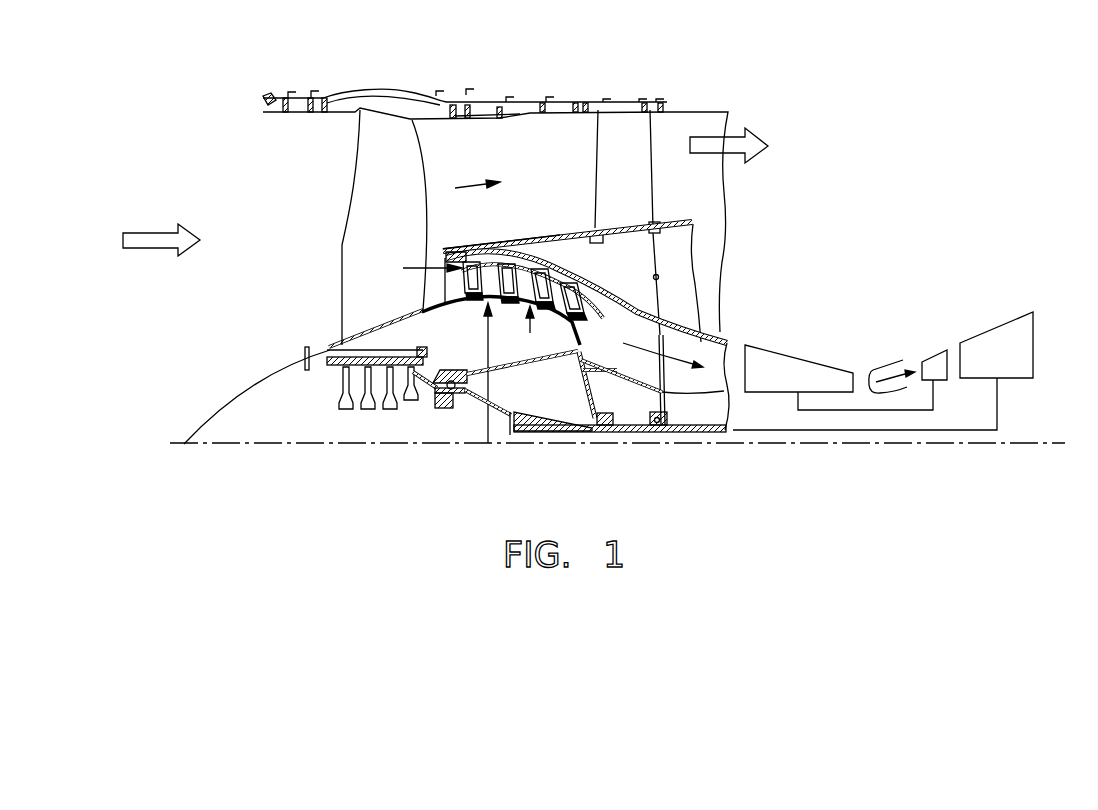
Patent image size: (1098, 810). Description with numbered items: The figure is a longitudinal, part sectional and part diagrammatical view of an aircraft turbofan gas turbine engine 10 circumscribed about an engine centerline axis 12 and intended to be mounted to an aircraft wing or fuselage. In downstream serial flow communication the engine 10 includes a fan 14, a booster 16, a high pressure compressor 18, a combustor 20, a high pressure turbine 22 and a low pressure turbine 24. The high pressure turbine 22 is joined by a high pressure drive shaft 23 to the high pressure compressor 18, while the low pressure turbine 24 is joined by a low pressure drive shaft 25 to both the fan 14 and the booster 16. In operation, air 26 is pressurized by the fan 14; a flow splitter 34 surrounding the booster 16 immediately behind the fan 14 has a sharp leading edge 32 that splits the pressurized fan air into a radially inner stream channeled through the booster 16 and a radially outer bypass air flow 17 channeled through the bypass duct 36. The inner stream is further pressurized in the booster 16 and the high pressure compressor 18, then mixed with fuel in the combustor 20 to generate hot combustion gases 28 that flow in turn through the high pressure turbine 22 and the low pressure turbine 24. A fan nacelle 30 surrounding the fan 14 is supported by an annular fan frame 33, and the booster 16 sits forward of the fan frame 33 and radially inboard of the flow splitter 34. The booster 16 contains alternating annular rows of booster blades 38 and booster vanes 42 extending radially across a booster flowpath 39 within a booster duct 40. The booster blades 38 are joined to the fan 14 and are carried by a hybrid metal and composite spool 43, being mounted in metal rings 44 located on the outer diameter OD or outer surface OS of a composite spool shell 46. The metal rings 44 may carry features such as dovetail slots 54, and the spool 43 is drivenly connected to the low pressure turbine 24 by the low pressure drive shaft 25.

The aircraft turbofan gas turbine engine 10 is at (898, 50).
The engine centerline axis 12 is at (920, 447).
The fan 14 is at (359, 215).
The booster 16 is at (512, 330).
The bypass air flow 17 is at (470, 183).
The high pressure compressor 18 is at (769, 385).
The combustor 20 is at (880, 367).
The high pressure turbine 22 is at (928, 360).
The high pressure drive shaft 23 is at (865, 412).
The low pressure turbine 24 is at (976, 365).
The low pressure drive shaft 25 is at (788, 432).
The air 26 is at (158, 250).
The hot combustion gases 28 is at (884, 367).
The fan nacelle 30 is at (402, 102).
The sharp leading edge 32 is at (652, 140).
The annular fan frame 33 is at (618, 228).
The flow splitter 34 is at (542, 237).
The bypass duct 36 is at (509, 150).
The booster blades 38 is at (446, 256).
The booster flowpath 39 is at (483, 258).
The booster duct 40 is at (530, 268).
The booster vanes 42 is at (493, 249).
The hybrid metal and composite spool 43 is at (543, 317).
The metal rings 44 is at (470, 299).
The composite spool shell 46 is at (495, 299).
The dovetail slots 54 is at (470, 302).
The outer surface OS is at (580, 280).
The outer diameter OD is at (483, 428).